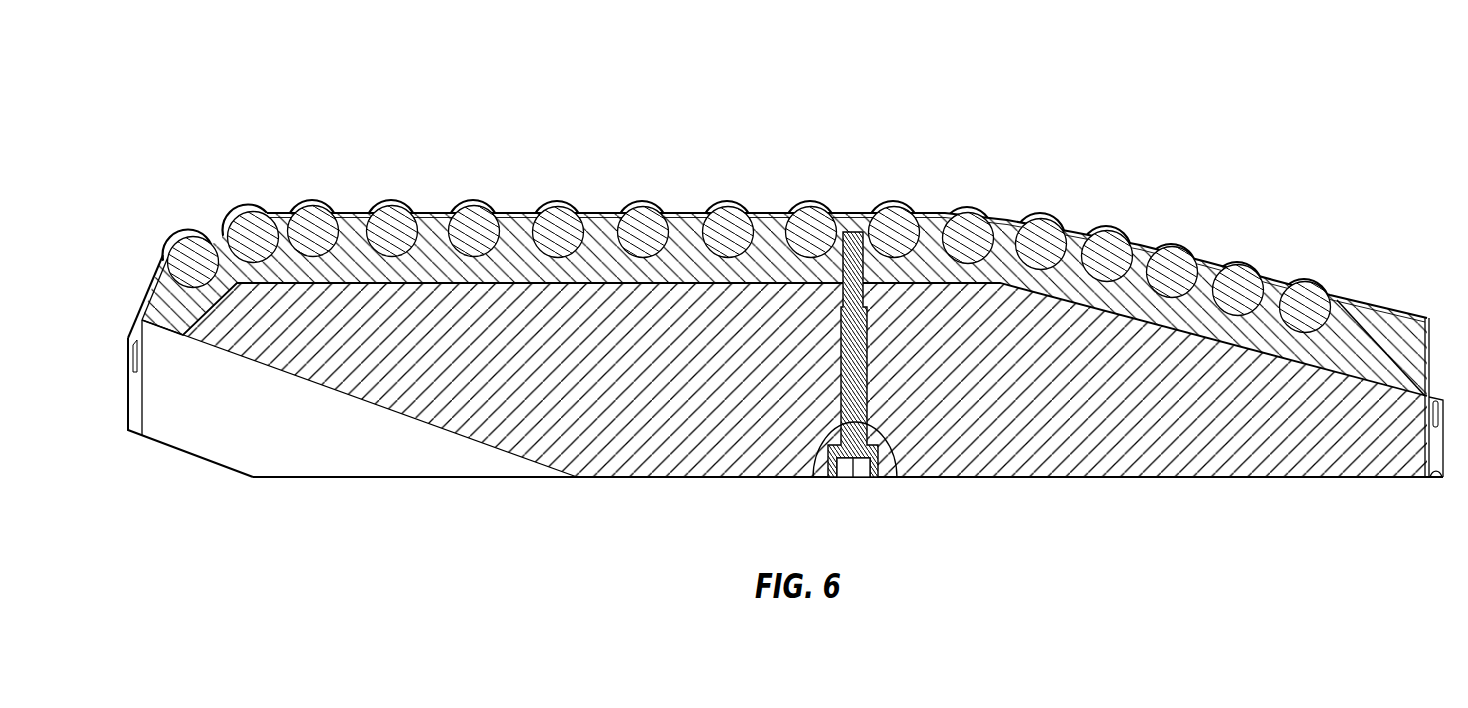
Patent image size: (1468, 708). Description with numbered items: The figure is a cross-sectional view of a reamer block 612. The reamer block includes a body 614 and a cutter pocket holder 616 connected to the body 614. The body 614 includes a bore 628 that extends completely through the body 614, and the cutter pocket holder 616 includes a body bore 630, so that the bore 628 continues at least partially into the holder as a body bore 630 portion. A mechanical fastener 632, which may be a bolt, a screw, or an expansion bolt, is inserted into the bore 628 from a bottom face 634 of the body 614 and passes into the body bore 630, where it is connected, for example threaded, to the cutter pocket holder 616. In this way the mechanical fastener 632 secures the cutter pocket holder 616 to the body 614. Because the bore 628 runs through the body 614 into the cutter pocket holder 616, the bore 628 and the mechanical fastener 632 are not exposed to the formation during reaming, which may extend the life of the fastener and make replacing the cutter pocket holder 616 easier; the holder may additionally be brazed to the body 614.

The reamer block 612 is at (1386, 78).
The body 614 is at (166, 401).
The cutter pocket holder 616 is at (1385, 334).
The bore 628 is at (897, 478).
The body bore 630 is at (852, 232).
The mechanical fastener 632 is at (813, 478).
The bottom face 634 is at (1078, 488).